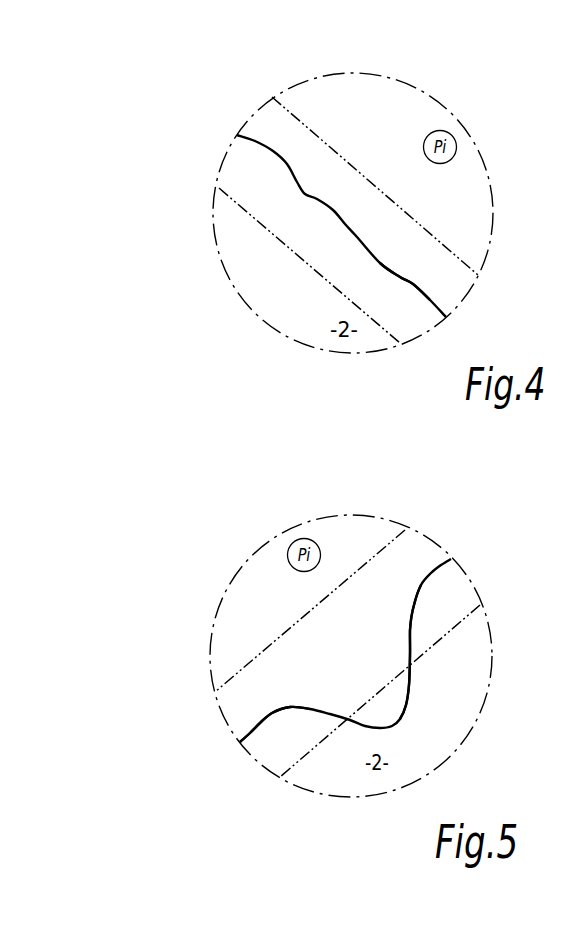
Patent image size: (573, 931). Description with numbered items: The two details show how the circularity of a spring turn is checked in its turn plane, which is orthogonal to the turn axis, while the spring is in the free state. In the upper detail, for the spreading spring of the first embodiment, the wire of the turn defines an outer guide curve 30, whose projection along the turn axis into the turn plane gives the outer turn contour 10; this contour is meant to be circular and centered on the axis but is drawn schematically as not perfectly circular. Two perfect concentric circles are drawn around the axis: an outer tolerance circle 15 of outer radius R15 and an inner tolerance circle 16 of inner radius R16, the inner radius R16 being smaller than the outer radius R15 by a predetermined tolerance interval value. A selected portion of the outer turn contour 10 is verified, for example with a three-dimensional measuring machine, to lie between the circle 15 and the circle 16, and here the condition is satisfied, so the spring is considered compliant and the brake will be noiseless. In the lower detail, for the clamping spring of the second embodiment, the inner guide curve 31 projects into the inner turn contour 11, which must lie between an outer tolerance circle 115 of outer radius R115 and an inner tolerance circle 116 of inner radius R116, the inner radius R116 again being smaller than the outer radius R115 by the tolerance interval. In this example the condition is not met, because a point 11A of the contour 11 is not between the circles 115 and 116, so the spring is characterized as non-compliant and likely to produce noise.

In FIG. 4, the outer turn contour 10 is at (343, 219).
In FIG. 4, the outer tolerance circle 15 is at (318, 122).
In FIG. 4, the inner tolerance circle 16 is at (219, 190).
In FIG. 4, the outer guide curve 30 is at (418, 280).
In FIG. 4, the outer radius R15 is at (337, 148).
In FIG. 4, the inner radius R16 is at (333, 283).
In FIG. 5, the inner turn contour 11 is at (436, 571).
In FIG. 5, the point of the inner turn contour 11A is at (270, 714).
In FIG. 5, the inner guide curve 31 is at (403, 597).
In FIG. 5, the outer tolerance circle 115 is at (434, 649).
In FIG. 5, the inner tolerance circle 116 is at (367, 565).
In FIG. 5, the outer radius R115 is at (373, 698).
In FIG. 5, the inner radius R116 is at (254, 661).